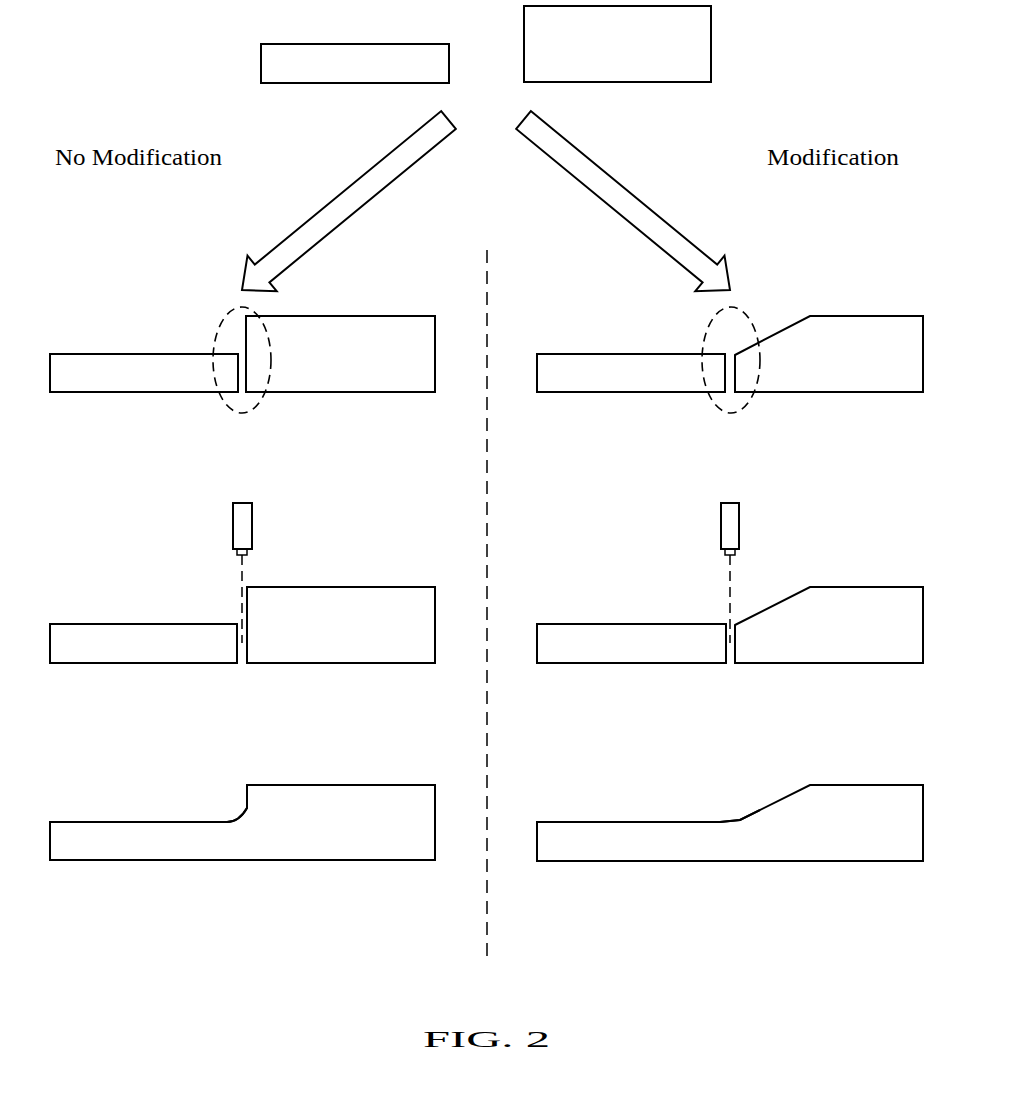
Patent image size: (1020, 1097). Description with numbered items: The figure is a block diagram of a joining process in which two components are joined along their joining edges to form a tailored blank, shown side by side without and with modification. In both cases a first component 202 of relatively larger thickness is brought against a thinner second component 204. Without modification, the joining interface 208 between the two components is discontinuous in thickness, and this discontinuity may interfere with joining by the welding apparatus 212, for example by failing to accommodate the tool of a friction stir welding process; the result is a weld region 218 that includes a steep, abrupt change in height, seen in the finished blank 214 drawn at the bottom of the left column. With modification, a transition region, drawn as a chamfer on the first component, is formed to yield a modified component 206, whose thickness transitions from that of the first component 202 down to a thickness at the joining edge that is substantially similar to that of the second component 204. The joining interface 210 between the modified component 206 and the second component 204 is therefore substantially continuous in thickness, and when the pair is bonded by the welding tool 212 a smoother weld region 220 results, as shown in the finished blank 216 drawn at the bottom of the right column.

The first component 202 is at (478, 334).
The second component 204 is at (388, 353).
The modified component 206 is at (829, 489).
The joining interface 208 is at (222, 327).
The joining interface 210 is at (750, 318).
The welding apparatus 212 is at (233, 528).
The welded part without modification 214 is at (242, 822).
The welded part with modification 216 is at (730, 823).
The weld region 218 is at (230, 798).
The weld region 220 is at (729, 806).